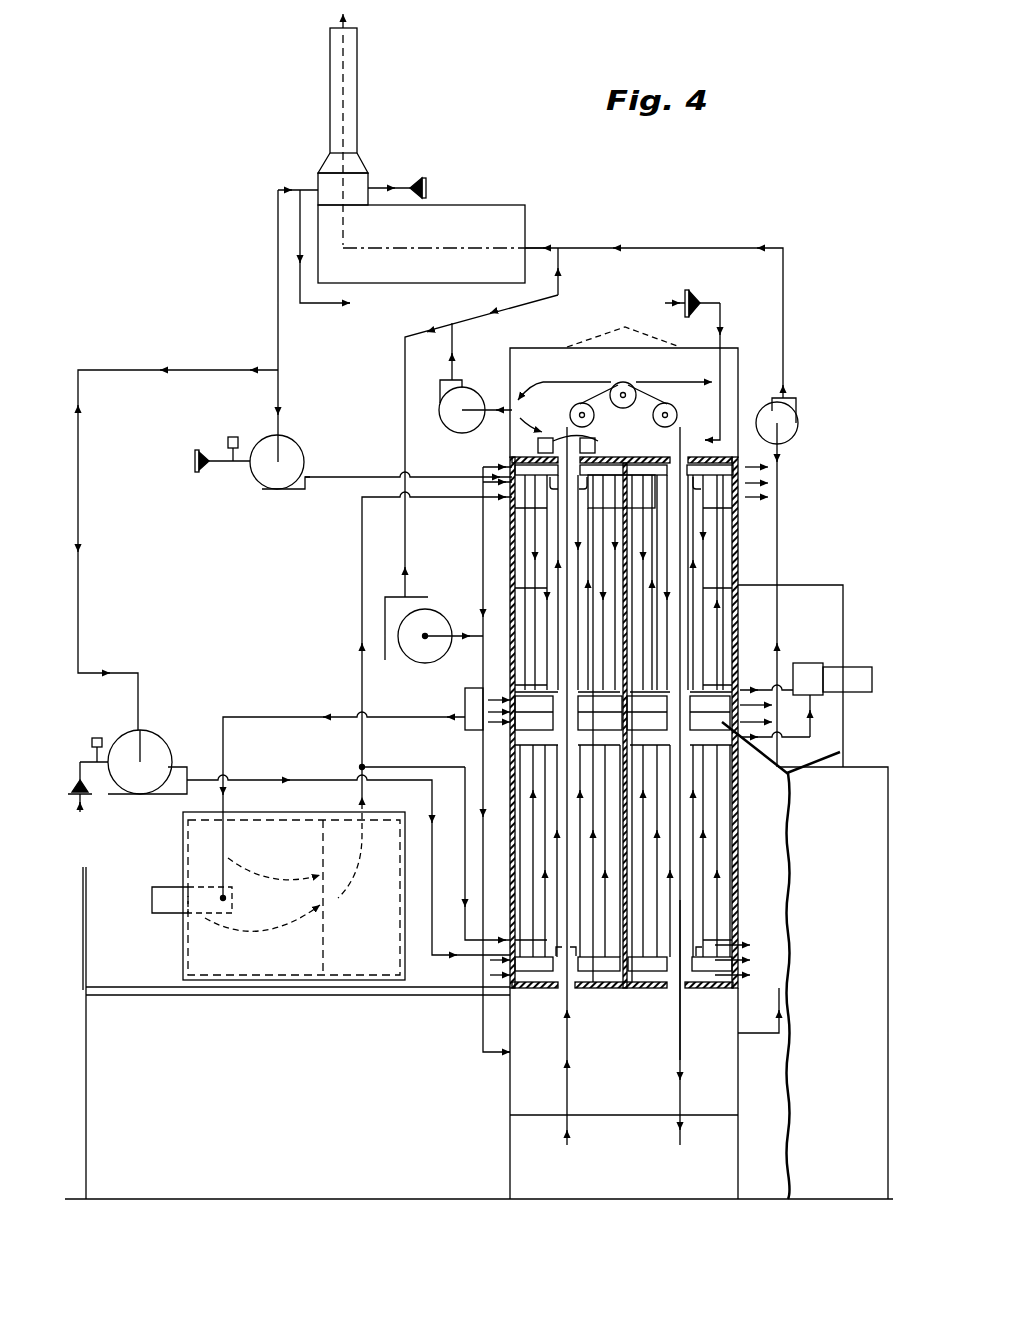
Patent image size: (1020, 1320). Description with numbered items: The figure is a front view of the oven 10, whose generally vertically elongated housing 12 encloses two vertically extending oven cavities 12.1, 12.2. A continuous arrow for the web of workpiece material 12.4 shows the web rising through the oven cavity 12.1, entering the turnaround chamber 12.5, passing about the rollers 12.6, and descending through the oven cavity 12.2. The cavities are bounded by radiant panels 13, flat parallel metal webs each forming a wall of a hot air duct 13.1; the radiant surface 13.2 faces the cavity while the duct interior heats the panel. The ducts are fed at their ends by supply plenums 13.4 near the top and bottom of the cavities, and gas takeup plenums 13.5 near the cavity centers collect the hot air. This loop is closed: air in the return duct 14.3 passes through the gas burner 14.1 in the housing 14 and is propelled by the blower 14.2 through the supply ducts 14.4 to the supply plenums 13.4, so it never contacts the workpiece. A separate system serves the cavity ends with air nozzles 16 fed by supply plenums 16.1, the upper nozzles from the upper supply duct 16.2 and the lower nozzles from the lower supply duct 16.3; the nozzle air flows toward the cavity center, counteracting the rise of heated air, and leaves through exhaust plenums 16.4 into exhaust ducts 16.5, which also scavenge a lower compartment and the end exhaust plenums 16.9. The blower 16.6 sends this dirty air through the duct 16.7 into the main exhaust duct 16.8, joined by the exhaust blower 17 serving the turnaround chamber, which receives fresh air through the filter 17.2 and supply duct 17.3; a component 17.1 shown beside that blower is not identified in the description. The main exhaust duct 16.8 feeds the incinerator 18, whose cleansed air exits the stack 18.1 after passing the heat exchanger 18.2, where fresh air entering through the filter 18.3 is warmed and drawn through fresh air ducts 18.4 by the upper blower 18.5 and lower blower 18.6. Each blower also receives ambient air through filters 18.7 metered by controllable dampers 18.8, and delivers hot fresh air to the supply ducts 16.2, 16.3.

The oven 10 is at (247, 323).
The housing 12 is at (740, 545).
The oven cavity 12.1 is at (592, 997).
The oven cavity 12.2 is at (633, 997).
The web of workpiece material 12.4 is at (678, 1066).
The turnaround chamber 12.5 is at (705, 405).
The rollers 12.6 is at (615, 682).
The radiant panel 13 is at (540, 773).
The hot air duct 13.1 is at (590, 583).
The radiant surface 13.2 is at (555, 553).
The supply plenum 13.4 is at (600, 503).
The gas takeup plenum 13.5 is at (603, 680).
The housing 14 is at (183, 950).
The gas burner 14.1 is at (158, 887).
The blower 14.2 is at (330, 988).
The return duct 14.3 is at (283, 715).
The supply ducts 14.4 is at (362, 592).
The air nozzles 16 is at (735, 515).
The supply plenums 16.1 is at (745, 468).
The upper supply duct 16.2 is at (355, 457).
The lower supply duct 16.3 is at (272, 768).
The exhaust plenums 16.4 is at (515, 724).
The exhaust ducts 16.5 is at (780, 577).
The blower 16.6 is at (798, 425).
The duct 16.7 is at (405, 380).
The main exhaust duct 16.8 is at (535, 246).
The exhaust plenums 16.9 is at (530, 1068).
The exhaust blower 17 is at (696, 982).
The fan 17.1 is at (468, 397).
The filter 17.2 is at (694, 288).
The supply duct 17.3 is at (724, 313).
The incinerator 18 is at (503, 210).
The stack 18.1 is at (357, 56).
The heat exchanger 18.2 is at (322, 165).
The filter 18.3 is at (417, 177).
The fresh air ducts 18.4 is at (278, 250).
The upper blower 18.5 is at (262, 492).
The lower blower 18.6 is at (152, 736).
The filters 18.7 is at (187, 454).
The controllable dampers 18.8 is at (228, 437).